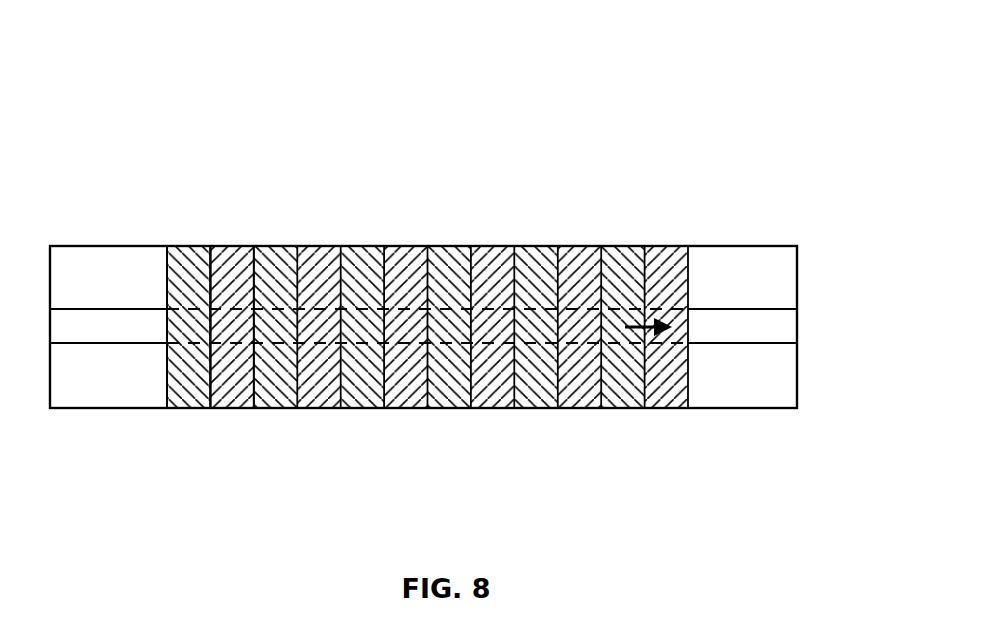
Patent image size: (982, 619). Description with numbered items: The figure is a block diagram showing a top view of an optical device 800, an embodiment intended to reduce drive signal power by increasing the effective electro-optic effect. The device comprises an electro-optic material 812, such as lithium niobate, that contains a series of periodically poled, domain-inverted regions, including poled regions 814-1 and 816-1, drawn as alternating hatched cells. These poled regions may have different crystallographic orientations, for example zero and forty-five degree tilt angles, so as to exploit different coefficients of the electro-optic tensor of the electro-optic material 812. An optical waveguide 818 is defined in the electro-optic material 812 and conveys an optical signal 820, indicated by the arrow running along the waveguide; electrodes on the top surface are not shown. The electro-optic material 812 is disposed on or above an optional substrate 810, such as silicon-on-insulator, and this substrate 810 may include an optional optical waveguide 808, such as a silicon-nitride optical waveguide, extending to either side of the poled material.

The optical device 800 is at (193, 65).
The electro-optic material 812 is at (170, 218).
The optical waveguide 818 is at (648, 320).
The optical waveguide 808 is at (747, 325).
The substrate 810 is at (763, 375).
The poled region 814-1 is at (183, 375).
The poled region 816-1 is at (315, 375).
The optical signal 820 is at (645, 330).